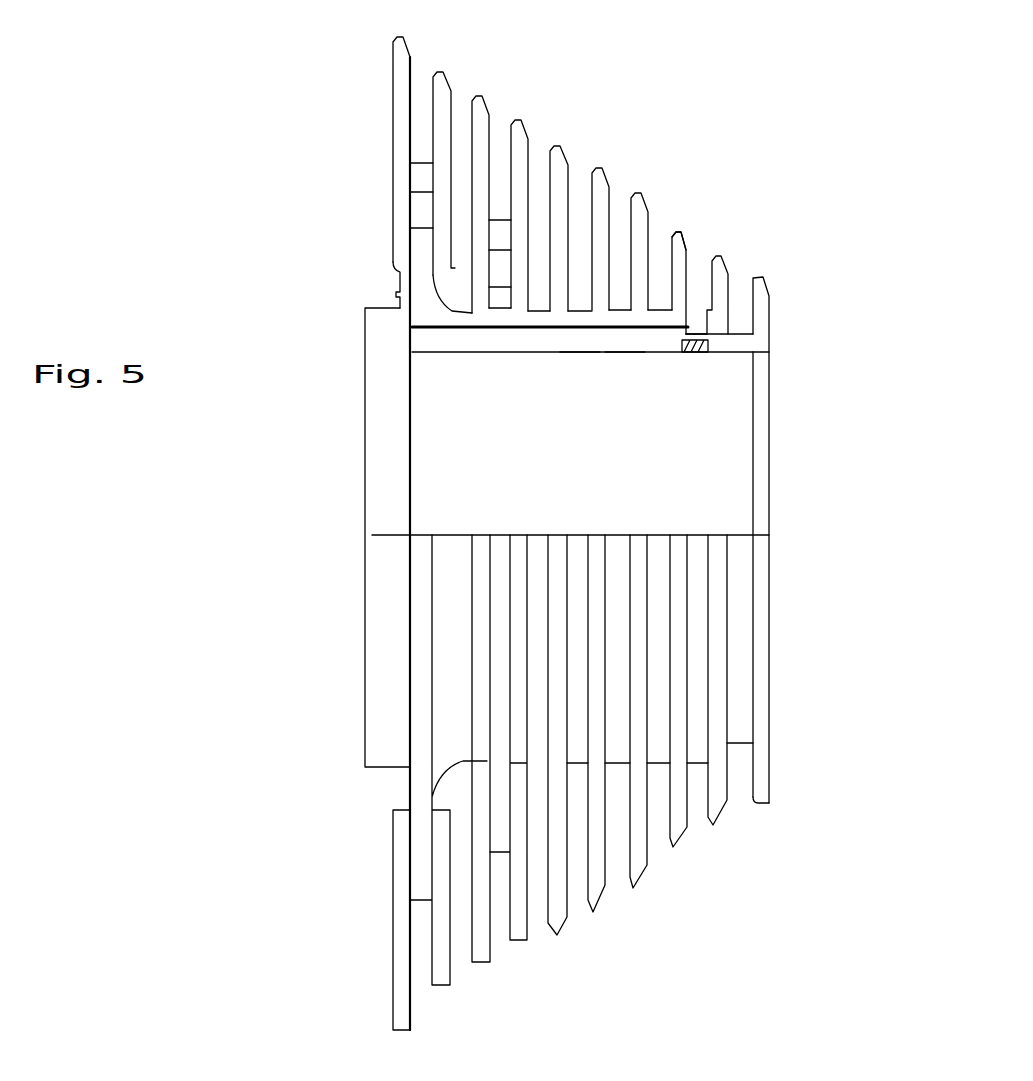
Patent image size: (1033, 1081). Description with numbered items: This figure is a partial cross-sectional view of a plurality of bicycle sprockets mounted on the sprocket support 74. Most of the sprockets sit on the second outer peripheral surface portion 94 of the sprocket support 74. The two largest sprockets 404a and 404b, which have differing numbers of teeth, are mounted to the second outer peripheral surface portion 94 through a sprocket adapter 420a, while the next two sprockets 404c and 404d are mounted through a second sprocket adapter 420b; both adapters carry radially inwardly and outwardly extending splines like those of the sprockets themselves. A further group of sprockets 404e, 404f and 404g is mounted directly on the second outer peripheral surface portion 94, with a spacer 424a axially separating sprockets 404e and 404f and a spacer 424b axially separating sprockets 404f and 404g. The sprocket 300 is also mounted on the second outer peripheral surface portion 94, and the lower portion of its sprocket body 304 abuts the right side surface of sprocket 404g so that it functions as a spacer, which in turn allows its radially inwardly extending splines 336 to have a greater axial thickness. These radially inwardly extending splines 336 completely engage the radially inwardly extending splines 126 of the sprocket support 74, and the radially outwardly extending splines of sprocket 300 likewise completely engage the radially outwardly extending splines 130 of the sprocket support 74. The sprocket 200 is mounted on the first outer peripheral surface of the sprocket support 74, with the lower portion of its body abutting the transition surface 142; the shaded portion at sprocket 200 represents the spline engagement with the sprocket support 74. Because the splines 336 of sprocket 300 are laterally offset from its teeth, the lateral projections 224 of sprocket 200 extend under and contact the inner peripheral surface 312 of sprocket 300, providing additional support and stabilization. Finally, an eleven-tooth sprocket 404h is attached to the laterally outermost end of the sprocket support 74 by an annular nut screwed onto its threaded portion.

The sprocket support 74 is at (296, 463).
The second outer peripheral surface portion 94 is at (435, 332).
The radially inwardly extending splines 126 is at (573, 342).
The radially outwardly extending splines 130 is at (619, 342).
The transition surface 142 is at (686, 330).
The sprocket 200 is at (726, 258).
The lateral projections 224 is at (778, 348).
The sprocket 300 is at (683, 233).
The sprocket body 304 is at (656, 308).
The inner peripheral surface 312 is at (685, 300).
The radially inwardly extending splines 336 is at (673, 349).
The sprocket 404a is at (396, 46).
The sprocket 404b is at (438, 72).
The sprocket 404c is at (475, 97).
The sprocket 404d is at (515, 121).
The sprocket 404e is at (557, 147).
The sprocket 404f is at (603, 160).
The sprocket 404g is at (641, 193).
The sprocket 404h is at (770, 281).
The sprocket adapter 420a is at (398, 296).
The sprocket adapter 420b is at (495, 317).
The spacer 424a is at (580, 316).
The spacer 424b is at (613, 318).